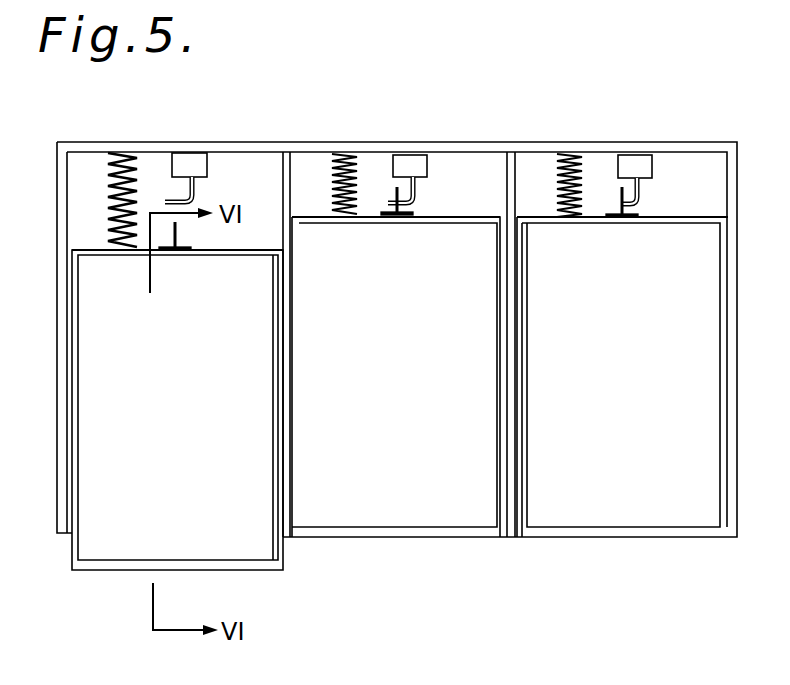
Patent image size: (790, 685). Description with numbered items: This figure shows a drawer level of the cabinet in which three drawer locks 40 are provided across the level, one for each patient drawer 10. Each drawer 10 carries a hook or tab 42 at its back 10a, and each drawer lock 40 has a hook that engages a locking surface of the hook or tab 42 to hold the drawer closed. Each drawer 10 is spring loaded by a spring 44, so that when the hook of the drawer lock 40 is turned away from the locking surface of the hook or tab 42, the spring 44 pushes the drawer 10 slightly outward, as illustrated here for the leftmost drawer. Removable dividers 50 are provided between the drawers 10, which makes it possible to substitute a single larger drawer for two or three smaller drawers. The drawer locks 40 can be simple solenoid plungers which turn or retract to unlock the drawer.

The patient drawer 10 is at (187, 422).
The back of drawer 10a is at (118, 253).
The drawer lock 40 is at (190, 167).
The hook or tab 42 is at (178, 233).
The spring 44 is at (110, 190).
The removable divider 50 is at (300, 176).